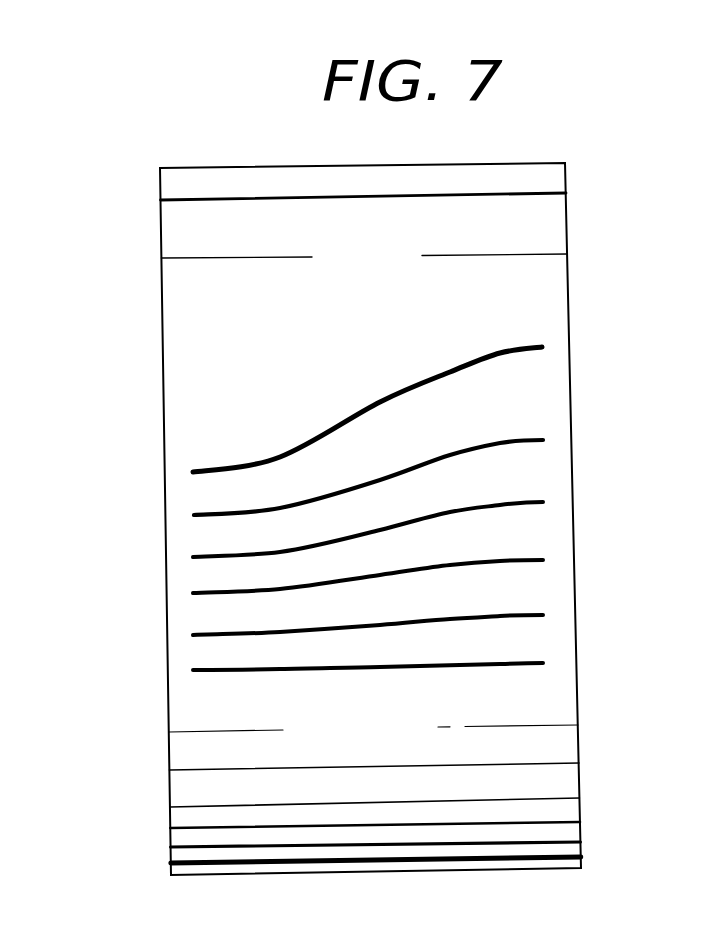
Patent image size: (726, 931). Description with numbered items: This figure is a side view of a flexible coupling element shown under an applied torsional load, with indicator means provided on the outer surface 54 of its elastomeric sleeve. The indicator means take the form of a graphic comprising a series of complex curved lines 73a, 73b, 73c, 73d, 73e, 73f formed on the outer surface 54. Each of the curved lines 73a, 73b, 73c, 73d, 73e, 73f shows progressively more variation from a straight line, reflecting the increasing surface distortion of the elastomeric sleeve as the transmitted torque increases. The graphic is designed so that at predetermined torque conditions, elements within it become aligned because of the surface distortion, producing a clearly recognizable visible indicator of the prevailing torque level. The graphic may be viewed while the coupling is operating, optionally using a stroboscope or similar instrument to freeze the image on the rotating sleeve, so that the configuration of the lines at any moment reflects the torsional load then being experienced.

The outer surface 54 is at (518, 242).
The curved line 73f is at (517, 350).
The curved line 73e is at (517, 440).
The curved line 73d is at (518, 502).
The curved line 73c is at (517, 560).
The curved line 73b is at (517, 615).
The curved line 73a is at (517, 663).